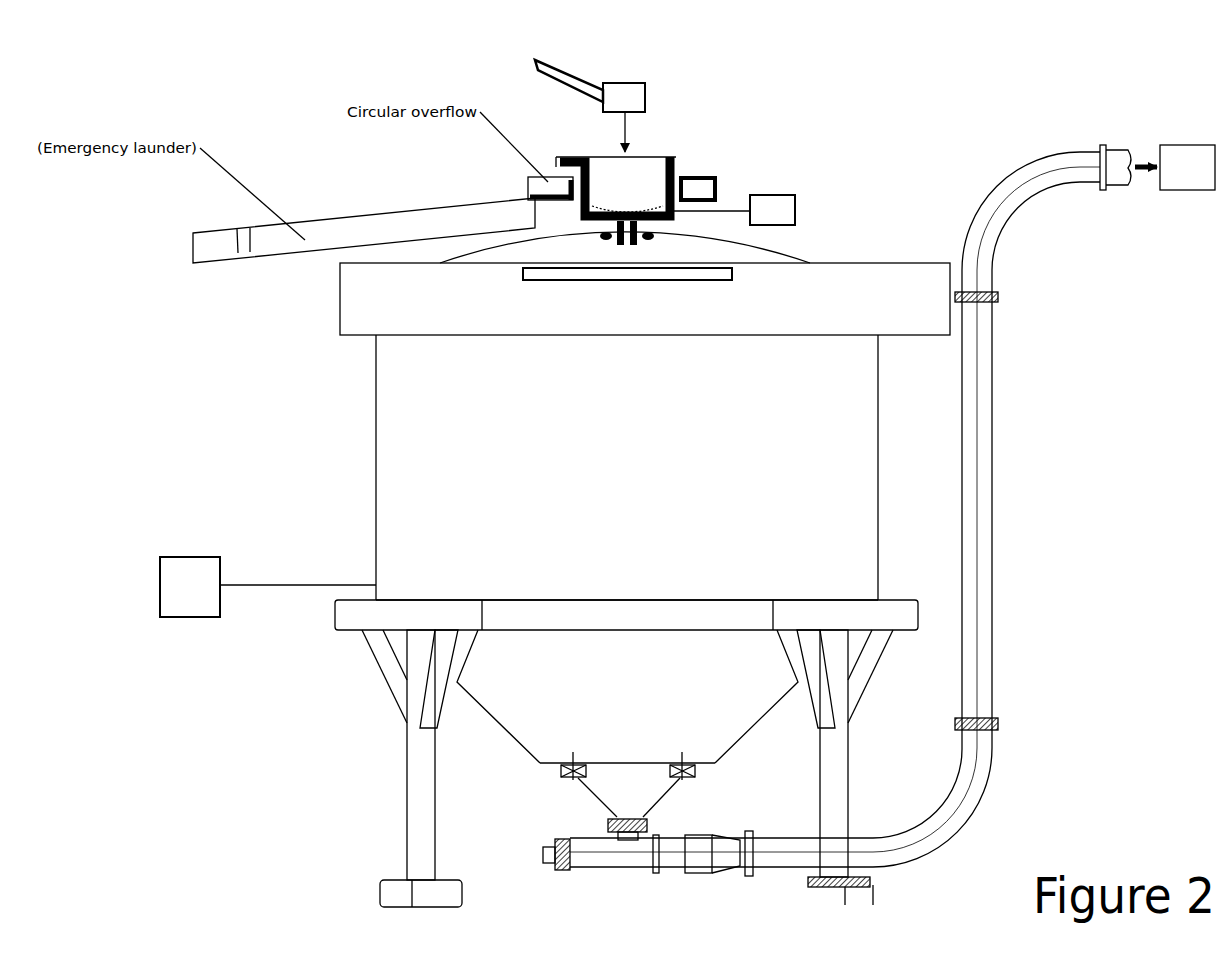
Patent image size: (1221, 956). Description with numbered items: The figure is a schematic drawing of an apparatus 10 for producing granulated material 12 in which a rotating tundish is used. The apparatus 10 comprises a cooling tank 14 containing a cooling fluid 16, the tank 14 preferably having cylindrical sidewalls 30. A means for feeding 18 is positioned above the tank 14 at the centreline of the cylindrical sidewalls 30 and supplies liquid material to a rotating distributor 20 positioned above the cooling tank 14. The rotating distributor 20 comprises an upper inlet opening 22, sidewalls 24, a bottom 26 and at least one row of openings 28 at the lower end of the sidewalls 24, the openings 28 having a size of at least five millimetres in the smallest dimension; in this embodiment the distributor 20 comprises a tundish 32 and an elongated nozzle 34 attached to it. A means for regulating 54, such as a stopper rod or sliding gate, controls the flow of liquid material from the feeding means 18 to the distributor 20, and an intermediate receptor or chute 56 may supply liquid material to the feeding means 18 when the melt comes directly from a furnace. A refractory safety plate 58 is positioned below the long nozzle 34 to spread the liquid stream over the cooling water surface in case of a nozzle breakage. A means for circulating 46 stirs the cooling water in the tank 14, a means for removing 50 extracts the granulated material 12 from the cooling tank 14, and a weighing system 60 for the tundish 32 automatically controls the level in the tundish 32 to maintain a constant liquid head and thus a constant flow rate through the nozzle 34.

The apparatus 10 is at (880, 188).
The granulated material 12 is at (1175, 167).
The cooling tank 14 is at (601, 569).
The cooling fluid 16 is at (755, 460).
The means for feeding 18 is at (606, 85).
The rotating distributor 20 is at (623, 165).
The upper inlet opening 22 is at (672, 137).
The sidewalls 24 is at (675, 167).
The bottom 26 is at (653, 220).
The openings 28 is at (628, 250).
The cylindrical sidewalls 30 is at (376, 540).
The tundish 32 is at (653, 157).
The elongated nozzle 34 is at (640, 230).
The means for circulating 46 is at (196, 618).
The means for removing 50 is at (630, 857).
The means for regulating 54 is at (633, 82).
The intermediate receptor or chute 56 is at (535, 62).
The refractory safety plate 58 is at (523, 272).
The weighing system 60 is at (776, 196).